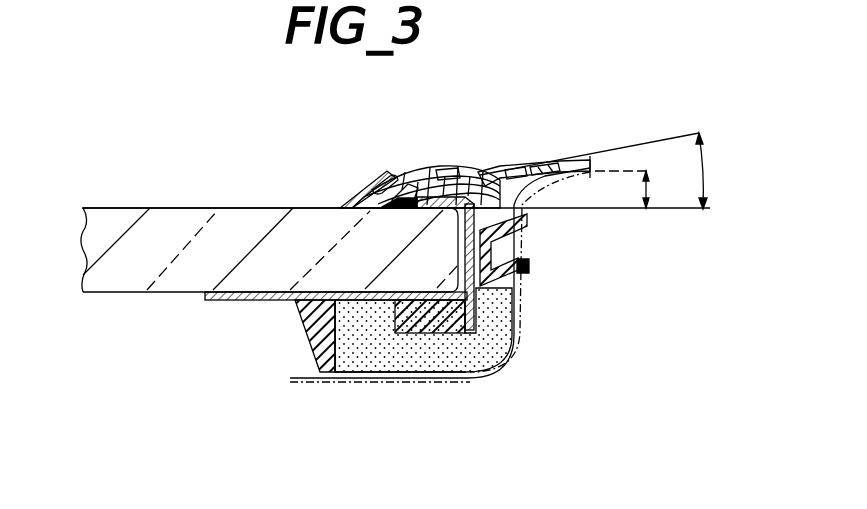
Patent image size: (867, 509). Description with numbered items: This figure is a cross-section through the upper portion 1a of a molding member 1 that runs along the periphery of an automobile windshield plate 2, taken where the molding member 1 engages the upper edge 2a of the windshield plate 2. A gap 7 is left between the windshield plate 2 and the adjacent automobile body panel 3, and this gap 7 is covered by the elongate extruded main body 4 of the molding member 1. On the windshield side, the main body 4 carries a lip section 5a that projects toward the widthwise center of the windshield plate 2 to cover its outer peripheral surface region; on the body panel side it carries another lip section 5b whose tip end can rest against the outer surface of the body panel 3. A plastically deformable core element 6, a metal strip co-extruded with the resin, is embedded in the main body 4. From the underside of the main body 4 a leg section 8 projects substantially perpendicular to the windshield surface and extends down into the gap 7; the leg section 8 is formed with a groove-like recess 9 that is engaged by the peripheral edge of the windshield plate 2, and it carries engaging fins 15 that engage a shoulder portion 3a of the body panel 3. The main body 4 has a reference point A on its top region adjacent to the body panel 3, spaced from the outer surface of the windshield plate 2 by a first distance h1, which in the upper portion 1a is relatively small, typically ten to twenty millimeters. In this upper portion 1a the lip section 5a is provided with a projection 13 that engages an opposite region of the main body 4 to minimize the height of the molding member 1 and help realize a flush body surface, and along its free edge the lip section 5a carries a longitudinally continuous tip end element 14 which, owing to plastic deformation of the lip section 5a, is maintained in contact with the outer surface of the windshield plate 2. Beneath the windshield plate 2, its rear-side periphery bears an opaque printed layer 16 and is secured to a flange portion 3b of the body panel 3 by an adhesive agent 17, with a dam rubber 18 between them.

The molding member 1 is at (425, 152).
The upper portion 1a is at (447, 168).
The windshield plate 2 is at (120, 215).
The upper edge 2a is at (268, 208).
The body panel 3 is at (577, 163).
The shoulder portion 3a is at (522, 308).
The flange portion 3b is at (428, 385).
The main body 4 is at (472, 169).
The lip section 5a is at (383, 180).
The lip section 5b is at (533, 168).
The core element 6 is at (413, 177).
The gap 7 is at (499, 252).
The leg section 8 is at (493, 335).
The groove-like recess 9 is at (452, 300).
The projection 13 is at (397, 176).
The tip end element 14 is at (348, 206).
The engaging fins 15 is at (532, 271).
The opaque printed layer 16 is at (218, 301).
The adhesive agent 17 is at (372, 348).
The dam rubber 18 is at (320, 347).
The reference point A is at (514, 169).
The first distance h1 is at (635, 189).